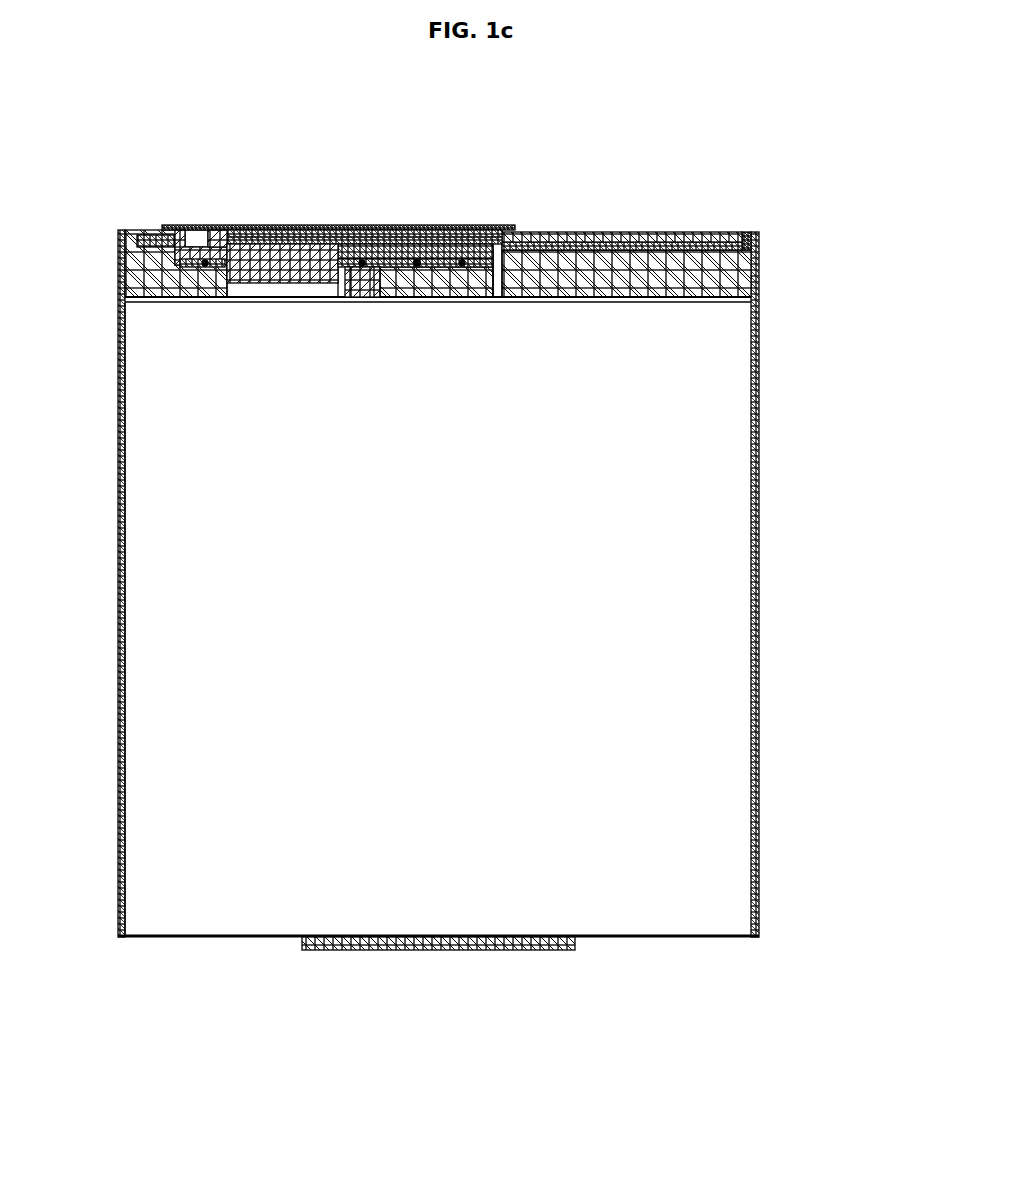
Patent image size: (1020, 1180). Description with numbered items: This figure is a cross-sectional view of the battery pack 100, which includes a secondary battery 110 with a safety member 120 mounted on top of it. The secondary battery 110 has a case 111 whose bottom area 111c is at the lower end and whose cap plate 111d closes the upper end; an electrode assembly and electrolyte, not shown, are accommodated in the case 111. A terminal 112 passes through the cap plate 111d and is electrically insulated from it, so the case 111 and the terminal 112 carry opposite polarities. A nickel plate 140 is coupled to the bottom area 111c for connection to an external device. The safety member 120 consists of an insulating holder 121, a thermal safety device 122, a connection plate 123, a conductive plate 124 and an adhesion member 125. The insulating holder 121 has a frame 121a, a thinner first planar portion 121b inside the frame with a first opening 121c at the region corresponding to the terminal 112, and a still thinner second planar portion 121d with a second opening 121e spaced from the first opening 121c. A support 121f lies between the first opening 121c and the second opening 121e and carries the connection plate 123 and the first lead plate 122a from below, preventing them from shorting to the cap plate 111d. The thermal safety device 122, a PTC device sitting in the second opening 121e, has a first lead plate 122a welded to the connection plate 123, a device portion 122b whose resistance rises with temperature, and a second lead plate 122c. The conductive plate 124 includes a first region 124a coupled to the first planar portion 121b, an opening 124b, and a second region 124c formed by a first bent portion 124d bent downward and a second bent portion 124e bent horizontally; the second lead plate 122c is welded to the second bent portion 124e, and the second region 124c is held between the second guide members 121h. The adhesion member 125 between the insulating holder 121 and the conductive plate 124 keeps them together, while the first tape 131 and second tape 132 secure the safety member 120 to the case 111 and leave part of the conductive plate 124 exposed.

The battery pack 100 is at (836, 154).
The secondary battery 110 is at (233, 936).
The case 111 is at (181, 907).
The bottom area 111c is at (633, 938).
The cap plate 111d is at (740, 290).
The terminal 112 is at (458, 289).
The safety member 120 is at (752, 229).
The insulating holder 121 is at (758, 272).
The frame 121a is at (758, 240).
The first planar portion 121b is at (612, 246).
The first opening 121c is at (479, 252).
The second planar portion 121d is at (250, 230).
The second opening 121e is at (325, 242).
The support 121f is at (362, 257).
The second guide member 121h is at (215, 239).
The thermal safety device 122 is at (350, 357).
The first lead plate 122a is at (352, 270).
The device portion 122b is at (256, 286).
The second lead plate 122c is at (199, 270).
The connection plate 123 is at (400, 268).
The conductive plate 124 is at (588, 229).
The first region 124a is at (546, 237).
The opening 124b is at (441, 246).
The second region 124c is at (243, 170).
The first bent portion 124d is at (196, 236).
The second bent portion 124e is at (213, 242).
The adhesion member 125 is at (163, 229).
The first tape 131 is at (403, 250).
The second tape 132 is at (118, 320).
The nickel plate 140 is at (460, 952).